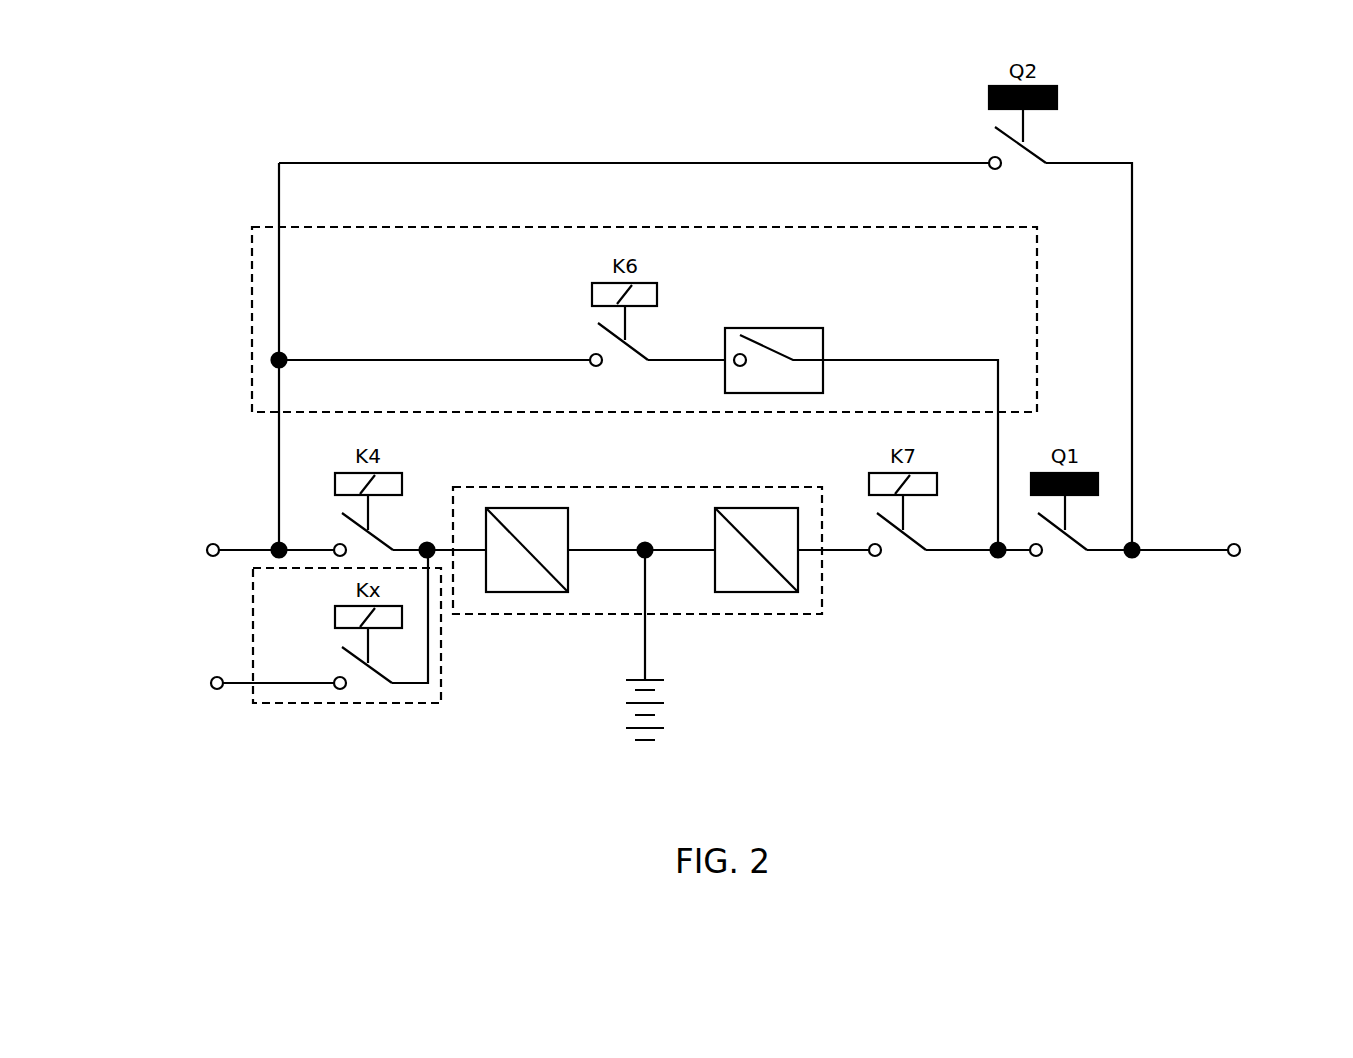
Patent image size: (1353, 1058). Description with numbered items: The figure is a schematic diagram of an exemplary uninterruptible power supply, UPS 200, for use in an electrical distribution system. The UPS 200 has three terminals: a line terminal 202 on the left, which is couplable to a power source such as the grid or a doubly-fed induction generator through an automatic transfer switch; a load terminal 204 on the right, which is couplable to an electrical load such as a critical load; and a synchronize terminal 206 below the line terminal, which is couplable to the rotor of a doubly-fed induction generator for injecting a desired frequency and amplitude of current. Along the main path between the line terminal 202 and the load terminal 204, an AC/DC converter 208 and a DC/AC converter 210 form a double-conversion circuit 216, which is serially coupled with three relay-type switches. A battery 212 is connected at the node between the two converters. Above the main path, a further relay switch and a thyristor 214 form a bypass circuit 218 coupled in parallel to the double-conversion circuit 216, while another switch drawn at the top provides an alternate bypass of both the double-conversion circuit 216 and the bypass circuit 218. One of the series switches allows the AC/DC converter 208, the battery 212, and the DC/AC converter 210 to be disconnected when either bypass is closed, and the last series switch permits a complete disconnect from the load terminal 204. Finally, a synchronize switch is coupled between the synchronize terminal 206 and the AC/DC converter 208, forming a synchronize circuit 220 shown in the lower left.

The uninterruptible power supply 200 is at (192, 133).
The line terminal 202 is at (205, 551).
The load terminal 204 is at (1241, 550).
The synchronize terminal 206 is at (210, 684).
The AC/DC converter 208 is at (537, 592).
The DC/AC converter 210 is at (753, 592).
The battery 212 is at (664, 728).
The thyristor 214 is at (828, 330).
The double-conversion circuit 216 is at (823, 603).
The bypass circuit 218 is at (670, 226).
The synchronize circuit 220 is at (415, 703).